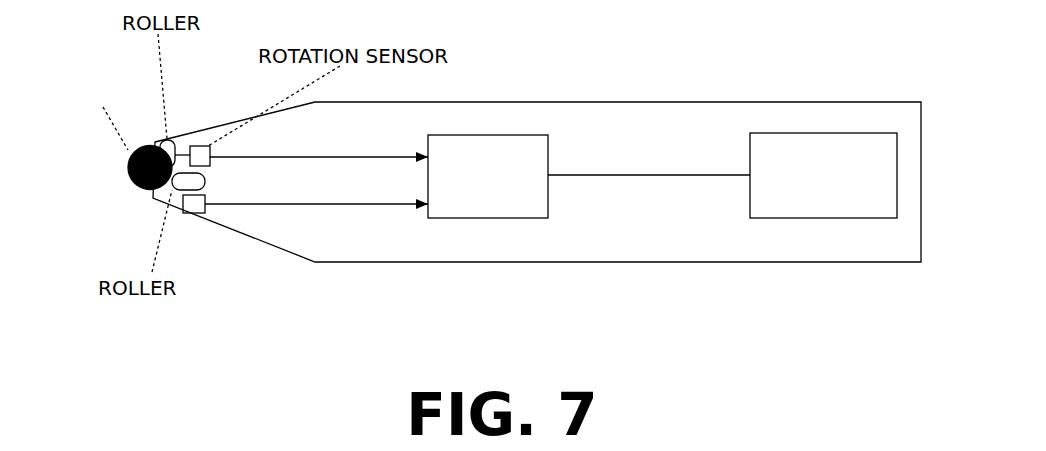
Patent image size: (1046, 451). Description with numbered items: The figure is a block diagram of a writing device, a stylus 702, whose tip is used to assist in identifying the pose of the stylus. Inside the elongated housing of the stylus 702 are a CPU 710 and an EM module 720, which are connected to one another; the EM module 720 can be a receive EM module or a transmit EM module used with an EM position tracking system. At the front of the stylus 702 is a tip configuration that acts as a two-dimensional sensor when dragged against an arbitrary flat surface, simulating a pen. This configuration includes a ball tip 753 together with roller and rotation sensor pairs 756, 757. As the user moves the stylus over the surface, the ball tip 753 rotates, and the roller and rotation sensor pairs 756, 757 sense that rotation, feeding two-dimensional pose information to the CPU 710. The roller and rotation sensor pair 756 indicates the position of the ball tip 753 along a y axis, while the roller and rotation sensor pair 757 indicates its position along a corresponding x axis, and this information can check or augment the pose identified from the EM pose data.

The stylus 702 is at (713, 100).
The CPU 710 is at (497, 132).
The EM module 720 is at (848, 132).
The ball tip 753 is at (131, 190).
The roller and rotation sensor pair 756 is at (200, 144).
The roller and rotation sensor pair 757 is at (198, 214).